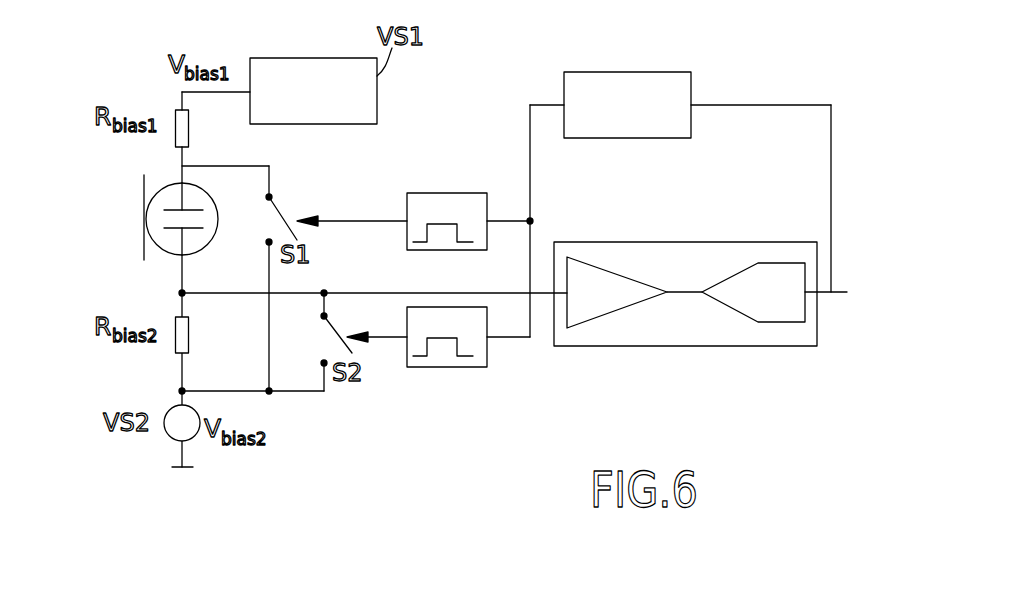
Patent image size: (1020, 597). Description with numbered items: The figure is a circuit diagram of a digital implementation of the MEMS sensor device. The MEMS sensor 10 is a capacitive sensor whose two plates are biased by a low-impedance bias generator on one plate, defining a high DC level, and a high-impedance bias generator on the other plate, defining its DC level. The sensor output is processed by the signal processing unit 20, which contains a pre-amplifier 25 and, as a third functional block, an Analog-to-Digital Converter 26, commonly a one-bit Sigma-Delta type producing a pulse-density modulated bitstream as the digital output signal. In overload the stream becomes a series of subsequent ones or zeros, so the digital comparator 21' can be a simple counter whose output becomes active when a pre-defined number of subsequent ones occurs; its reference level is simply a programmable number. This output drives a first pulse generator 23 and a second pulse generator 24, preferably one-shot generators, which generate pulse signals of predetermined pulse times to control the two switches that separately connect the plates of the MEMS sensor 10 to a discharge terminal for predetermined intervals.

The MEMS sensor 10 is at (144, 229).
The signal processing unit 20 is at (718, 324).
The digital comparator 21' is at (673, 153).
The first pulse generator 23 is at (468, 193).
The second pulse generator 24 is at (465, 367).
The pre-amplifier 25 is at (600, 320).
The Analog-to-Digital Converter (ADC) 26 is at (782, 322).